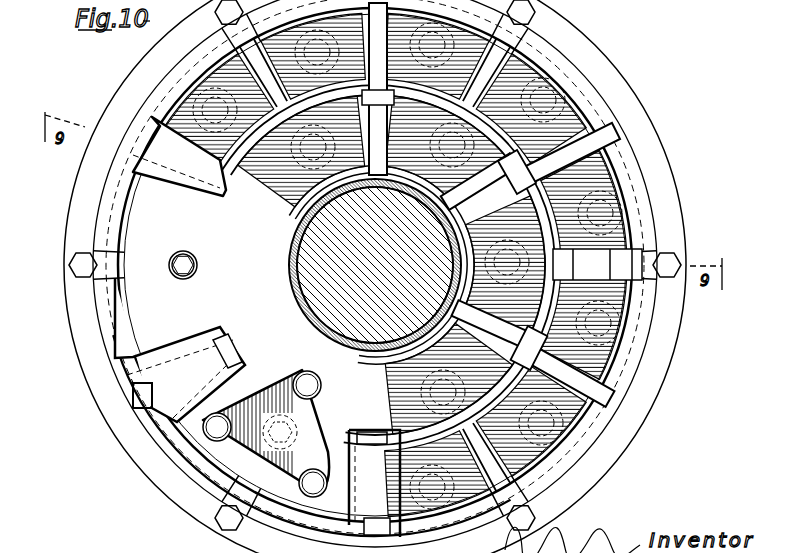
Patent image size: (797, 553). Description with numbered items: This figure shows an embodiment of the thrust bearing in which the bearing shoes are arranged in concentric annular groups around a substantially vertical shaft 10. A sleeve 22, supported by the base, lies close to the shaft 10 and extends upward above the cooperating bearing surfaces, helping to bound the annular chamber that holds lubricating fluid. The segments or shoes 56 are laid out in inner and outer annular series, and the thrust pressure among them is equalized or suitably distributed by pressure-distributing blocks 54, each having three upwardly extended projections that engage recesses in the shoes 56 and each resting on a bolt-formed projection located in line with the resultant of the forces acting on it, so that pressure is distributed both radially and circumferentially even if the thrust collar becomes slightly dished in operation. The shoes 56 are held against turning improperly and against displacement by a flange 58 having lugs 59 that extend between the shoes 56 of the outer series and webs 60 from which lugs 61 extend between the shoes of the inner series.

The shaft 10 is at (300, 256).
The sleeve 22 is at (290, 288).
The pressure-distributing block 54 is at (697, 196).
The segments or shoes 56 is at (490, 162).
The flange 58 is at (625, 133).
The lugs 59 is at (510, 35).
The webs 60 is at (183, 172).
The lugs 61 is at (240, 357).